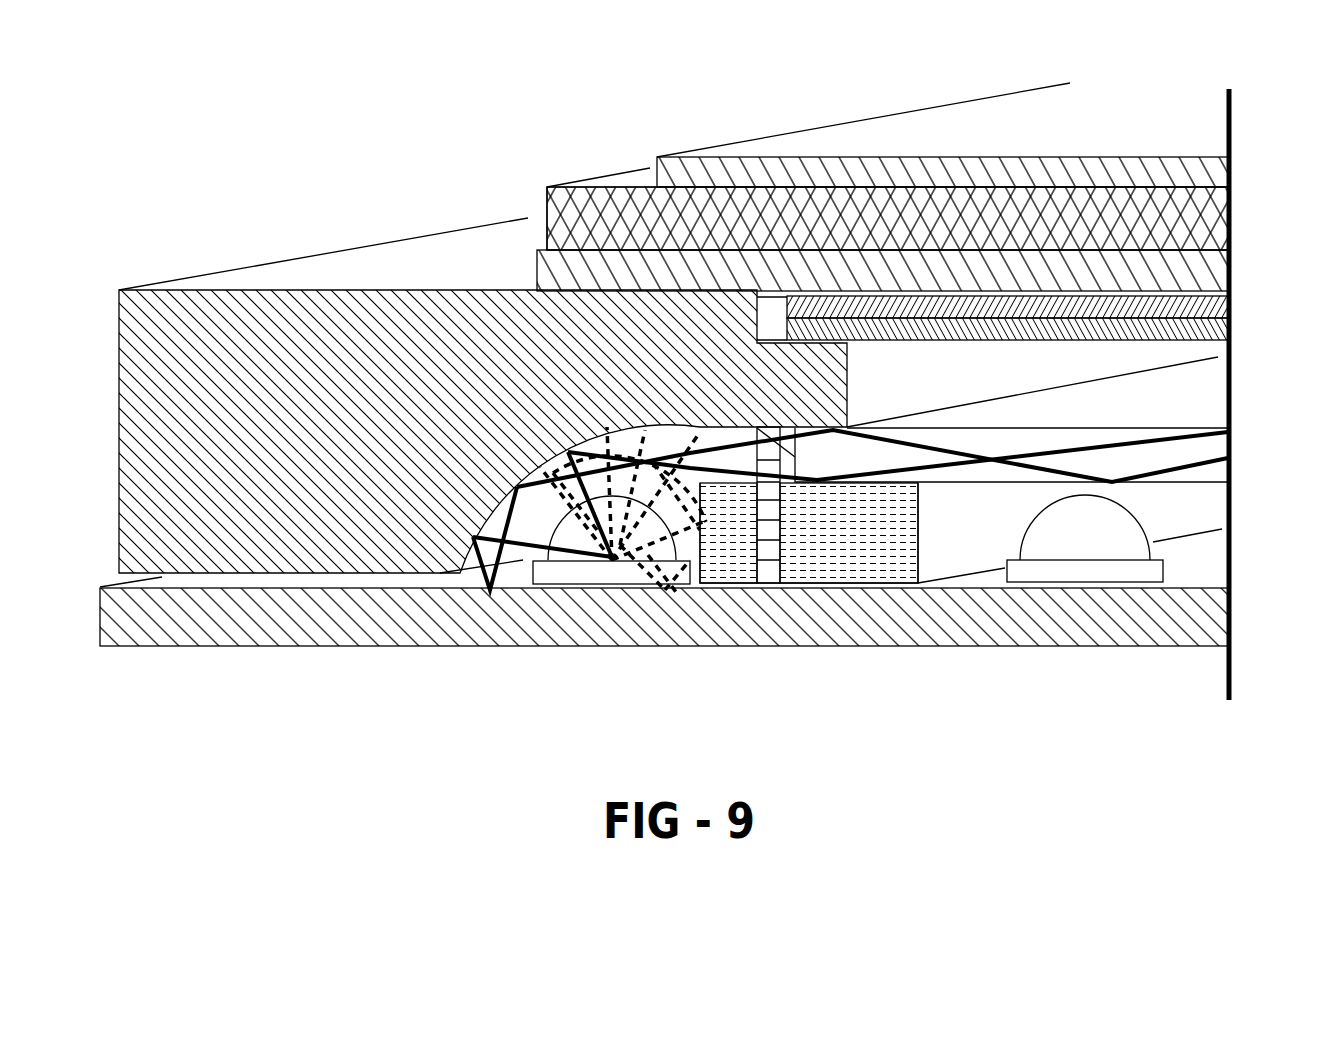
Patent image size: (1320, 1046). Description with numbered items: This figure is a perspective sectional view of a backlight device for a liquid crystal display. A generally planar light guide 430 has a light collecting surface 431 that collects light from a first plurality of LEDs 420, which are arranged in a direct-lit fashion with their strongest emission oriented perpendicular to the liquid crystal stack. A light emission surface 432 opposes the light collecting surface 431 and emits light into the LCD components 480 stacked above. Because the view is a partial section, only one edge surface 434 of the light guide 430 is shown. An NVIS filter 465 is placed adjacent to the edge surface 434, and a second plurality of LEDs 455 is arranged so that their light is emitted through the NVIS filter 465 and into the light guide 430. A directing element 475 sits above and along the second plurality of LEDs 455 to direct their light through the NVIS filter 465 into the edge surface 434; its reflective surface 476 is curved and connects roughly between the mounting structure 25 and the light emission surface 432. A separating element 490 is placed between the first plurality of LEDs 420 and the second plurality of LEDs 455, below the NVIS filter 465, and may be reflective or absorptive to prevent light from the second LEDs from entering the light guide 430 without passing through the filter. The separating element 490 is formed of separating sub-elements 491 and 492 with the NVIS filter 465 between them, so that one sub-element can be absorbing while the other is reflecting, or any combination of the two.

The mounting structure 25 is at (260, 613).
The first plurality of LEDs 420 is at (1060, 570).
The light guide 430 is at (1213, 470).
The light collecting surface 431 is at (1187, 482).
The light emission surface 432 is at (1173, 428).
The edge surface 434 is at (757, 428).
The second plurality of LEDs 455 is at (548, 572).
The NVIS filter 465 is at (765, 572).
The directing element 475 is at (473, 362).
The reflective surface 476 is at (470, 525).
The LCD components 480 is at (1232, 158).
The separating element 490 is at (750, 585).
The separating sub-element 491 is at (728, 572).
The separating sub-element 492 is at (883, 570).